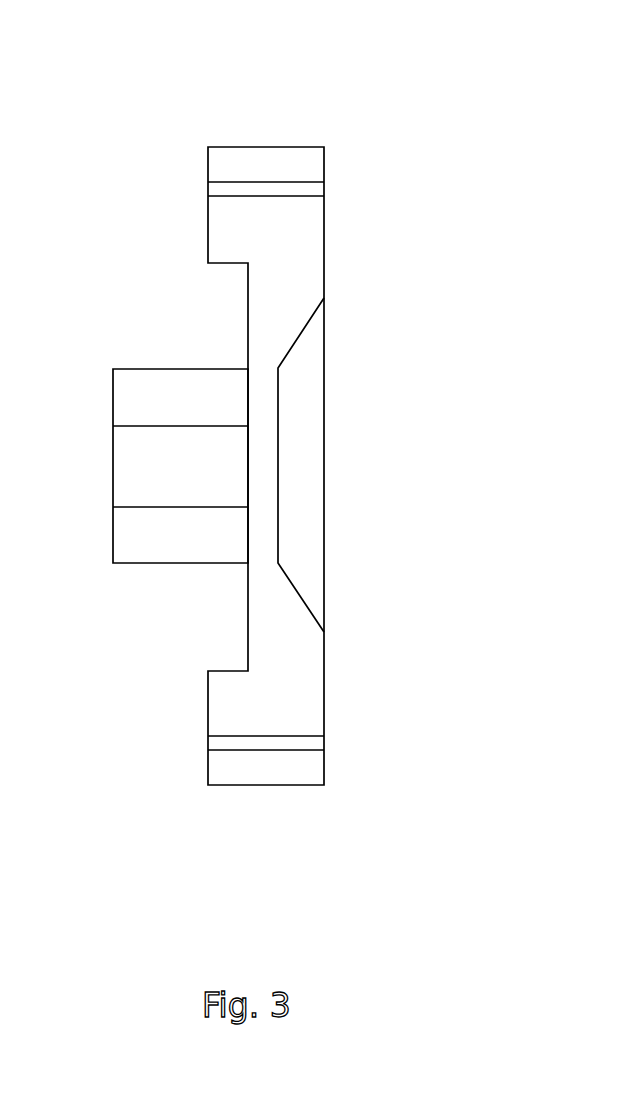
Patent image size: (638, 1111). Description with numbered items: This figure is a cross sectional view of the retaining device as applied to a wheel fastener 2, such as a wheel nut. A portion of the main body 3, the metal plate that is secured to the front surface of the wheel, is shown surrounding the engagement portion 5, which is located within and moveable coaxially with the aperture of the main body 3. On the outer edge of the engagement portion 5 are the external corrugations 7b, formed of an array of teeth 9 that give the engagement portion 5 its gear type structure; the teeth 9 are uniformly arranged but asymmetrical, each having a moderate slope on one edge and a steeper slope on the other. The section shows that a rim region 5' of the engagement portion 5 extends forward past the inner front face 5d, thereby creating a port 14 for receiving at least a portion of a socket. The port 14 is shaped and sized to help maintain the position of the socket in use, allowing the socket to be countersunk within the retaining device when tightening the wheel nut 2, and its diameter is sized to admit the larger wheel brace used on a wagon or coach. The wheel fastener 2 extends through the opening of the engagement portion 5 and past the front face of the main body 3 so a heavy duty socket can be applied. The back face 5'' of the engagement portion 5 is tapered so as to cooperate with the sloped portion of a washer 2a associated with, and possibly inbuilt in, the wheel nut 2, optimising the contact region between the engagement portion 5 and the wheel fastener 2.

The wheel fastener 2 is at (155, 400).
The washer 2a is at (303, 462).
The main portion 3 is at (272, 165).
The engagement portion 5 is at (310, 466).
The rim region 5' is at (133, 475).
The back face 5'' is at (370, 457).
The inner front face 5d is at (243, 298).
The corrugations 7b is at (315, 192).
The teeth 9 is at (218, 190).
The port 14 is at (227, 590).